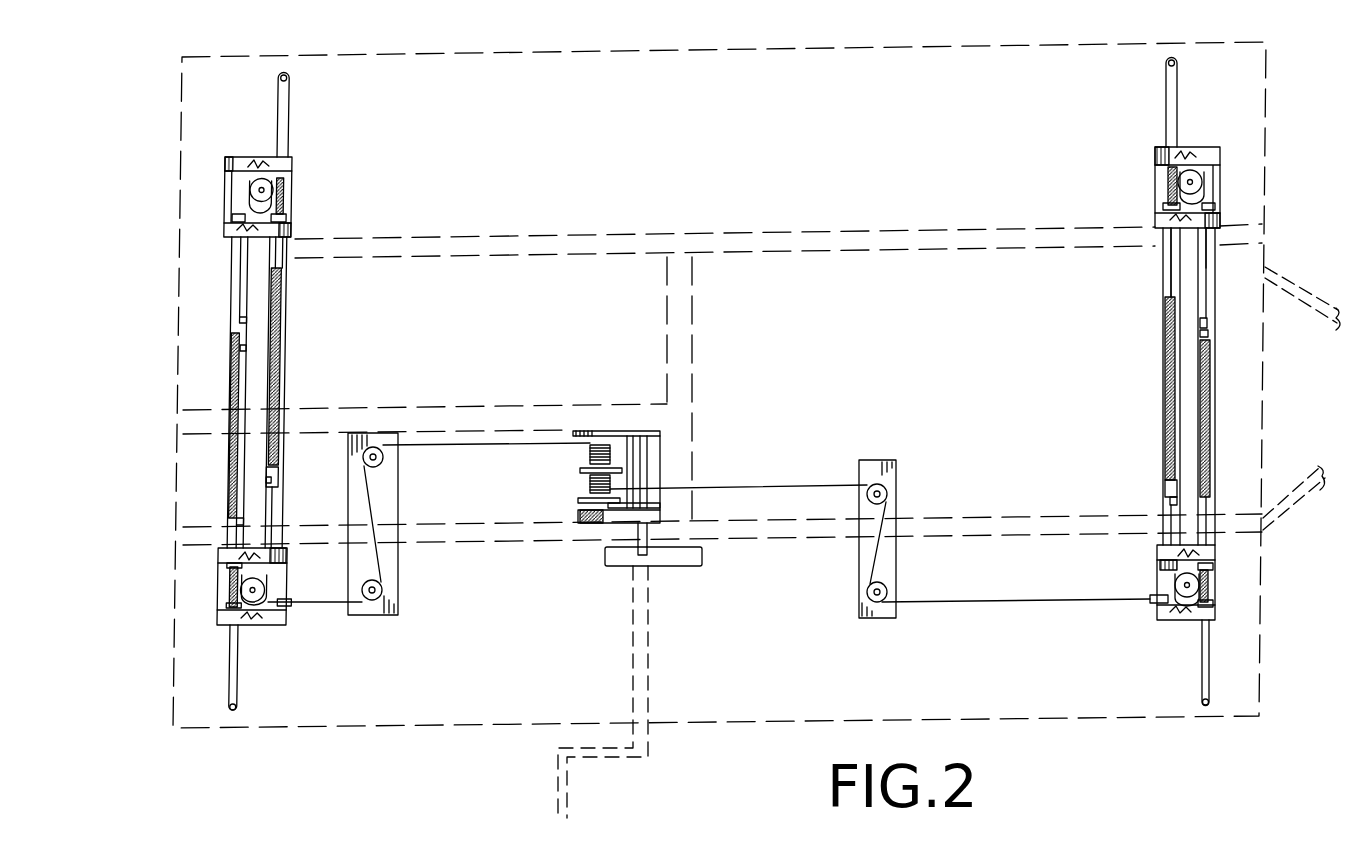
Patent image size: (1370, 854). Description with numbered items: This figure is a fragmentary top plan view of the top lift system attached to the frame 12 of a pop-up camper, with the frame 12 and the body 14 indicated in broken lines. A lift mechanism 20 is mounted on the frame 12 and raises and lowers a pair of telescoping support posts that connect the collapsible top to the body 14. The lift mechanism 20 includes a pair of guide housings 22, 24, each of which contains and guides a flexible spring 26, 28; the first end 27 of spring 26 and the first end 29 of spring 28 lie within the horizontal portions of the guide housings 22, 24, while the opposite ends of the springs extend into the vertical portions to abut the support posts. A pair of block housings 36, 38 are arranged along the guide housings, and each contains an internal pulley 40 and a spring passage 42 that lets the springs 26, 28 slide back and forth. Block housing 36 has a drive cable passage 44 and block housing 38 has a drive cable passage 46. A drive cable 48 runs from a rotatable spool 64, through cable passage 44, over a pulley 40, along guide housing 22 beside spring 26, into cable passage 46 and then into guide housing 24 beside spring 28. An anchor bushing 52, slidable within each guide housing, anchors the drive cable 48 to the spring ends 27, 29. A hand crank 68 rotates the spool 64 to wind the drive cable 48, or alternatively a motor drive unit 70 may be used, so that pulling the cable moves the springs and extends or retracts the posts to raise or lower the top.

The frame 12 is at (887, 230).
The body 14 is at (1267, 83).
The lift mechanism 20 is at (358, 317).
The guide housing 22 is at (1215, 265).
The guide housing 24 is at (1158, 277).
The flexible spring 26 is at (236, 366).
The first end of spring 26 27 is at (246, 350).
The flexible spring 28 is at (282, 358).
The first end of spring 28 29 is at (282, 466).
The block housing 36 is at (285, 620).
The block housing 38 is at (292, 166).
The internal pulley 40 is at (257, 185).
The spring passage 42 is at (288, 194).
The drive cable passage 44 is at (267, 603).
The drive cable passage 46 is at (252, 200).
The drive cable 48 is at (522, 438).
The anchor bushing 52 is at (240, 315).
The spool 64 is at (592, 468).
The crank 68 is at (628, 757).
The motor drive unit 70 is at (702, 566).